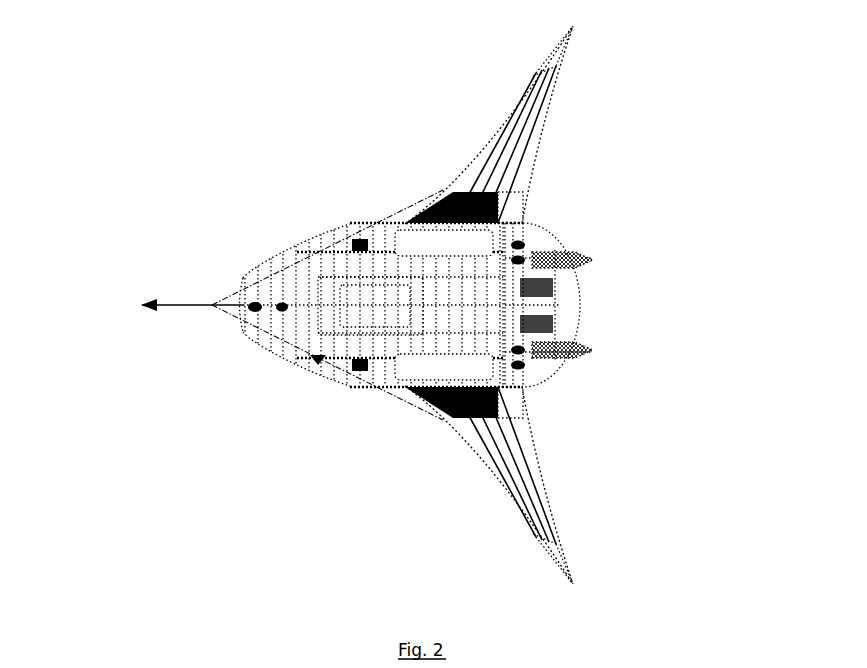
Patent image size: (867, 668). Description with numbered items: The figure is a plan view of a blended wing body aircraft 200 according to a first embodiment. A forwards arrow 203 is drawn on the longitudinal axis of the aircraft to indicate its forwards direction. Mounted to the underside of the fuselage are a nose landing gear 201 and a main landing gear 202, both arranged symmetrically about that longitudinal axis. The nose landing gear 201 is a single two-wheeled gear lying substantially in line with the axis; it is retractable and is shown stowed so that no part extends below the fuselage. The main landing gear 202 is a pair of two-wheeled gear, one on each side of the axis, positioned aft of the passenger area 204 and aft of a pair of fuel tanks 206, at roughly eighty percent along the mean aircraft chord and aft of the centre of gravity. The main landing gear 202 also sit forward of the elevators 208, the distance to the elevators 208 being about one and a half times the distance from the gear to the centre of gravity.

The blended wing body aircraft 200 is at (296, 212).
The nose landing gear 201 is at (256, 311).
The main landing gear 202 is at (525, 245).
The forwards arrow 203 is at (181, 303).
The passenger area 204 is at (312, 362).
The fuel tanks 206 is at (452, 243).
The elevators 208 is at (573, 350).